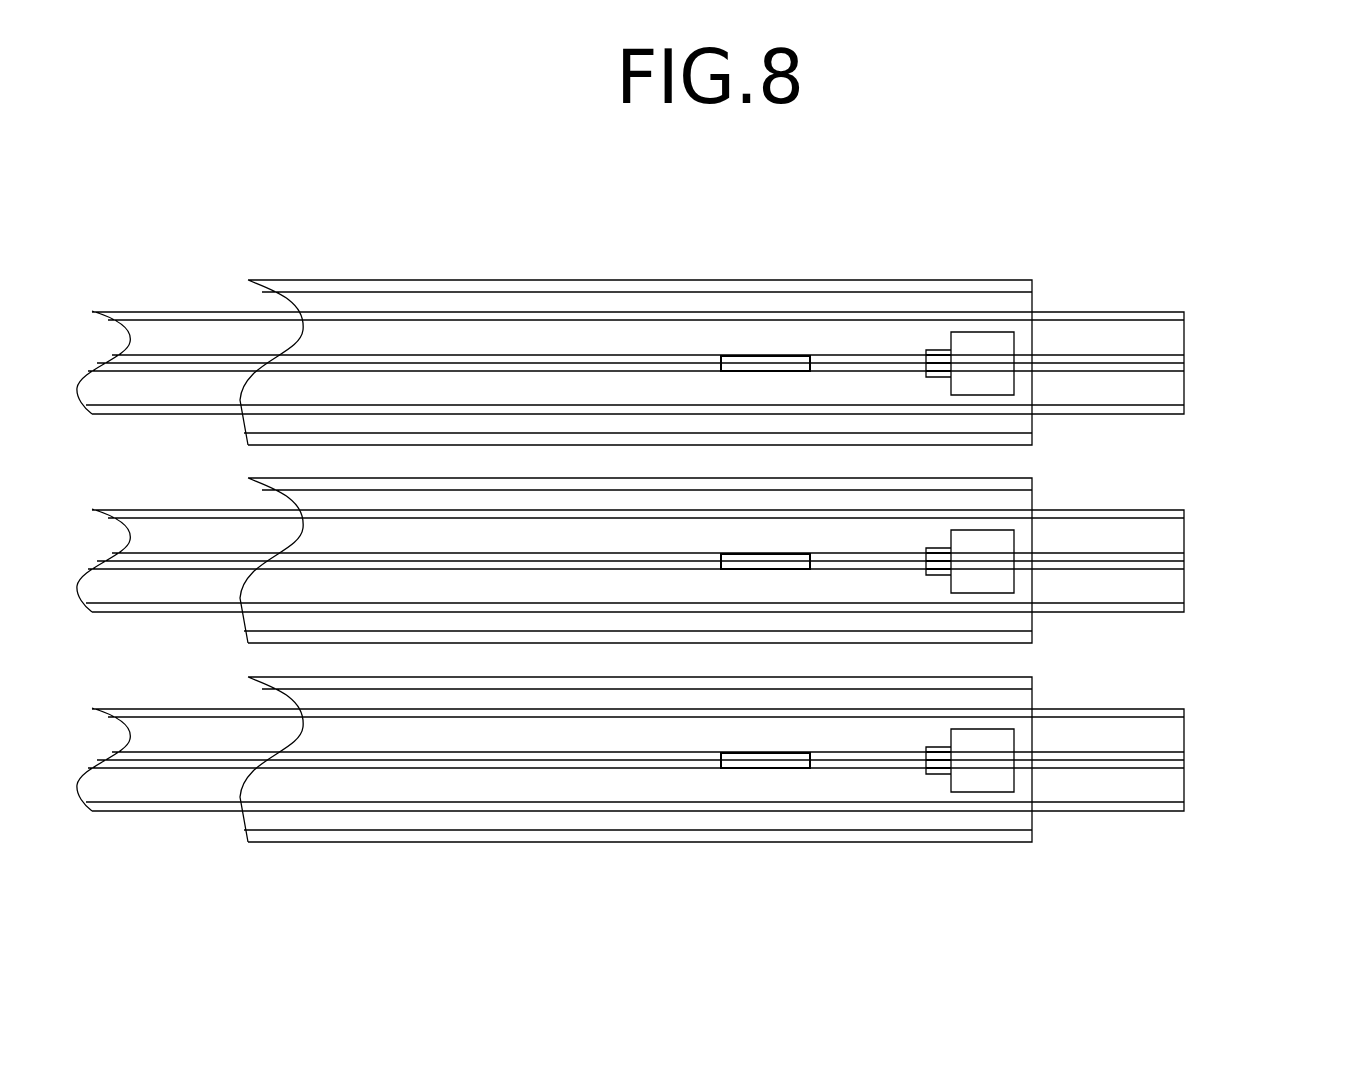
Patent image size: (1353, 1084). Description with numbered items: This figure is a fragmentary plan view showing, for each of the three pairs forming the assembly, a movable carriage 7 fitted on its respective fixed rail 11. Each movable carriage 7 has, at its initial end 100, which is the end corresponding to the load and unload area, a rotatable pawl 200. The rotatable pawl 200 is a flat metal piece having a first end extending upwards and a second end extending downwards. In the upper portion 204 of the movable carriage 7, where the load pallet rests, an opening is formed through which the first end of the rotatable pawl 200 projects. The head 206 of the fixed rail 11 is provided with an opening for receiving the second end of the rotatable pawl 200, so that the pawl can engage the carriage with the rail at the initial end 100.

The movable carriage 7 is at (946, 278).
The upper portion 204 is at (576, 338).
The rotatable pawl 200 is at (776, 353).
The head 206 is at (1078, 330).
The fixed rail 11 is at (1162, 312).
The initial end 100 is at (1184, 387).